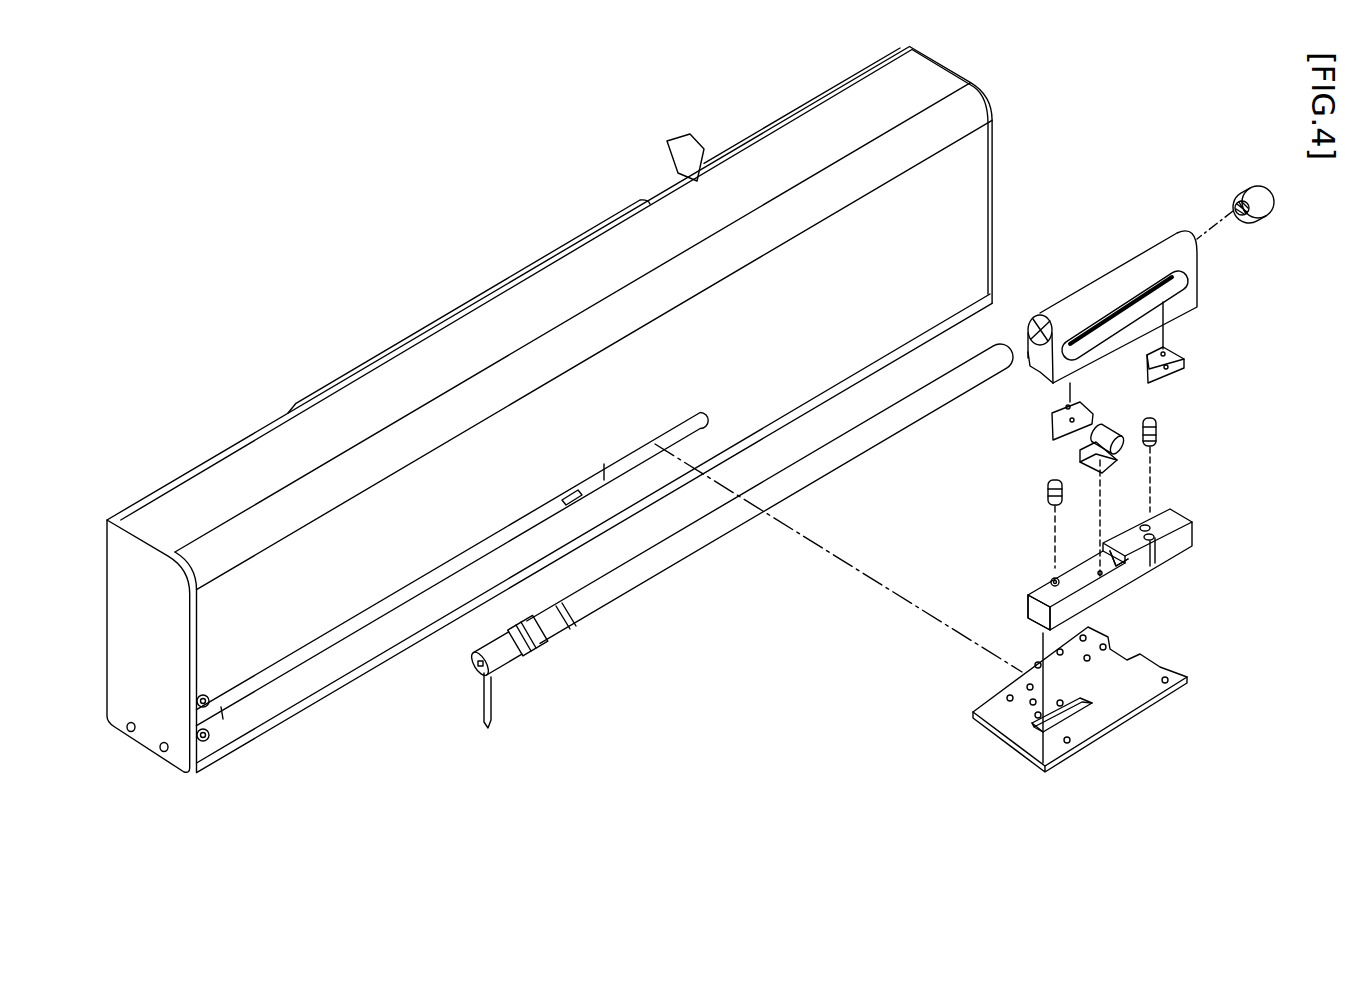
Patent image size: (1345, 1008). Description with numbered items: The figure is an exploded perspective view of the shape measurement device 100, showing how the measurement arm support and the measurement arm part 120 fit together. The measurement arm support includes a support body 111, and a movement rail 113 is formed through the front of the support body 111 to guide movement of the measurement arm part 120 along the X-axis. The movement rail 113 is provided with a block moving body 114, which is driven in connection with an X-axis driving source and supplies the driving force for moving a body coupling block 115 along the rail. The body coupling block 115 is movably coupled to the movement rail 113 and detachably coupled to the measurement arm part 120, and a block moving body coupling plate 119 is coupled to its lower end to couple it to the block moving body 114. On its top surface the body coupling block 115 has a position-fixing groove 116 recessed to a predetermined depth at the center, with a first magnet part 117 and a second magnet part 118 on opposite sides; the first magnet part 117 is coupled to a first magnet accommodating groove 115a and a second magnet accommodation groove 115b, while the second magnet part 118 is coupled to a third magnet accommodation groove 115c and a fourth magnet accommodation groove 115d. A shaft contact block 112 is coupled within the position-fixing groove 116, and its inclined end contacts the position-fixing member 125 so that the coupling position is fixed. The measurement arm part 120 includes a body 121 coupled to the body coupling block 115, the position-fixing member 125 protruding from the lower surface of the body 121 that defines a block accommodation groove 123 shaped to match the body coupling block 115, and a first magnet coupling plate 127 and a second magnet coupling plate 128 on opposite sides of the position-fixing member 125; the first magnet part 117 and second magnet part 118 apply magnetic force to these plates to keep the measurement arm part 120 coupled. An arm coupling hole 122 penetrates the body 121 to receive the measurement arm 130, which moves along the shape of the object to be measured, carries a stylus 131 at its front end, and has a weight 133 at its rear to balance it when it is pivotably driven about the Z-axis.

The actuator assembly 100 is at (202, 284).
The support body 111 is at (500, 330).
The movement rail 113 is at (452, 562).
The block moving body 114 is at (602, 476).
The measurement arm 130 is at (575, 622).
The stylus 131 is at (487, 690).
The measurement arm part 120 is at (1161, 193).
The body 121 is at (1107, 270).
The arm coupling hole 122 is at (1035, 313).
The block accommodation groove 123 is at (1036, 363).
The weight 133 is at (1250, 186).
The second magnet coupling plate 128 is at (1173, 349).
The first magnet coupling plate 127 is at (1055, 420).
The position-fixing member 125 is at (1109, 433).
The shaft contact block 112 is at (1080, 452).
The second magnet part 118 is at (1158, 436).
The first magnet part 117 is at (1047, 500).
The body coupling block 115 is at (1075, 605).
The first magnet accommodating groove 115a is at (1045, 596).
The second magnet accommodation groove 115b is at (1050, 580).
The third magnet accommodation groove 115c is at (1176, 530).
The fourth magnet accommodation groove 115d is at (1180, 520).
The position-fixing groove 116 is at (1140, 566).
The block moving body coupling plate 119 is at (1120, 693).